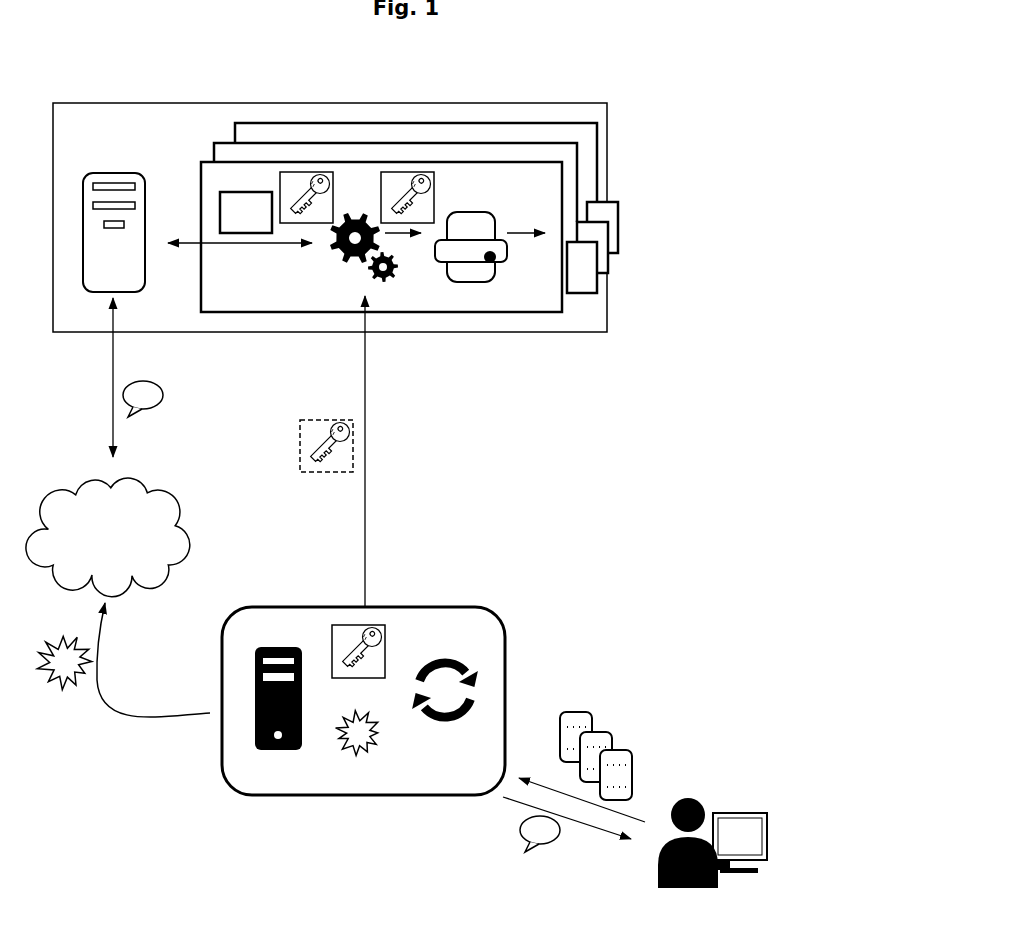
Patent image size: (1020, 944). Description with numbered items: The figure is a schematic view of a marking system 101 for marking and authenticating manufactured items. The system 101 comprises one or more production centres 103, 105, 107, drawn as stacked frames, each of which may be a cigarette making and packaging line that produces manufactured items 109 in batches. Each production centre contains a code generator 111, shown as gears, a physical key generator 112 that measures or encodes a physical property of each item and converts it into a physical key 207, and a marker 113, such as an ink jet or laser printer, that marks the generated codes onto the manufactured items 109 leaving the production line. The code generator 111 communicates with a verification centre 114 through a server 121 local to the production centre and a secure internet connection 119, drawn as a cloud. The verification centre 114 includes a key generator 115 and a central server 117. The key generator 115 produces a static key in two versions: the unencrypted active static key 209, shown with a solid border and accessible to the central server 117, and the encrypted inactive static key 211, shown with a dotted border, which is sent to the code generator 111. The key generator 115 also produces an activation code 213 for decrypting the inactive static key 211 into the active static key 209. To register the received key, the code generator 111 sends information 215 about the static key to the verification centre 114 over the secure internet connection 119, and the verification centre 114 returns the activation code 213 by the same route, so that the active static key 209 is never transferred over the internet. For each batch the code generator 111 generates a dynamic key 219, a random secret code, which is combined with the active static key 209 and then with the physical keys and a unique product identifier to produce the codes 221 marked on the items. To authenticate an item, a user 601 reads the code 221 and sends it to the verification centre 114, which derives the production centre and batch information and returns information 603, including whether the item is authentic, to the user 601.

The marking system 101 is at (643, 74).
The production centre 103 is at (205, 198).
The production centre 105 is at (205, 143).
The production centre 107 is at (251, 122).
The manufactured items 109 is at (609, 214).
The code generator 111 is at (359, 216).
The physical key generator 112 is at (246, 233).
The marker 113 is at (466, 223).
The verification centre 114 is at (319, 797).
The key generator 115 is at (445, 704).
The central server 117 is at (278, 713).
The secure internet connection 119 is at (184, 469).
The server 121 is at (96, 283).
The physical key 207 is at (306, 172).
The active static key 209 is at (358, 666).
The inactive static key 211 is at (326, 460).
The activation code 213 is at (207, 707).
The information 215 is at (143, 411).
The dynamic key 219 is at (427, 172).
The codes 221 is at (609, 756).
The user 601 is at (712, 860).
The information 603 is at (540, 846).